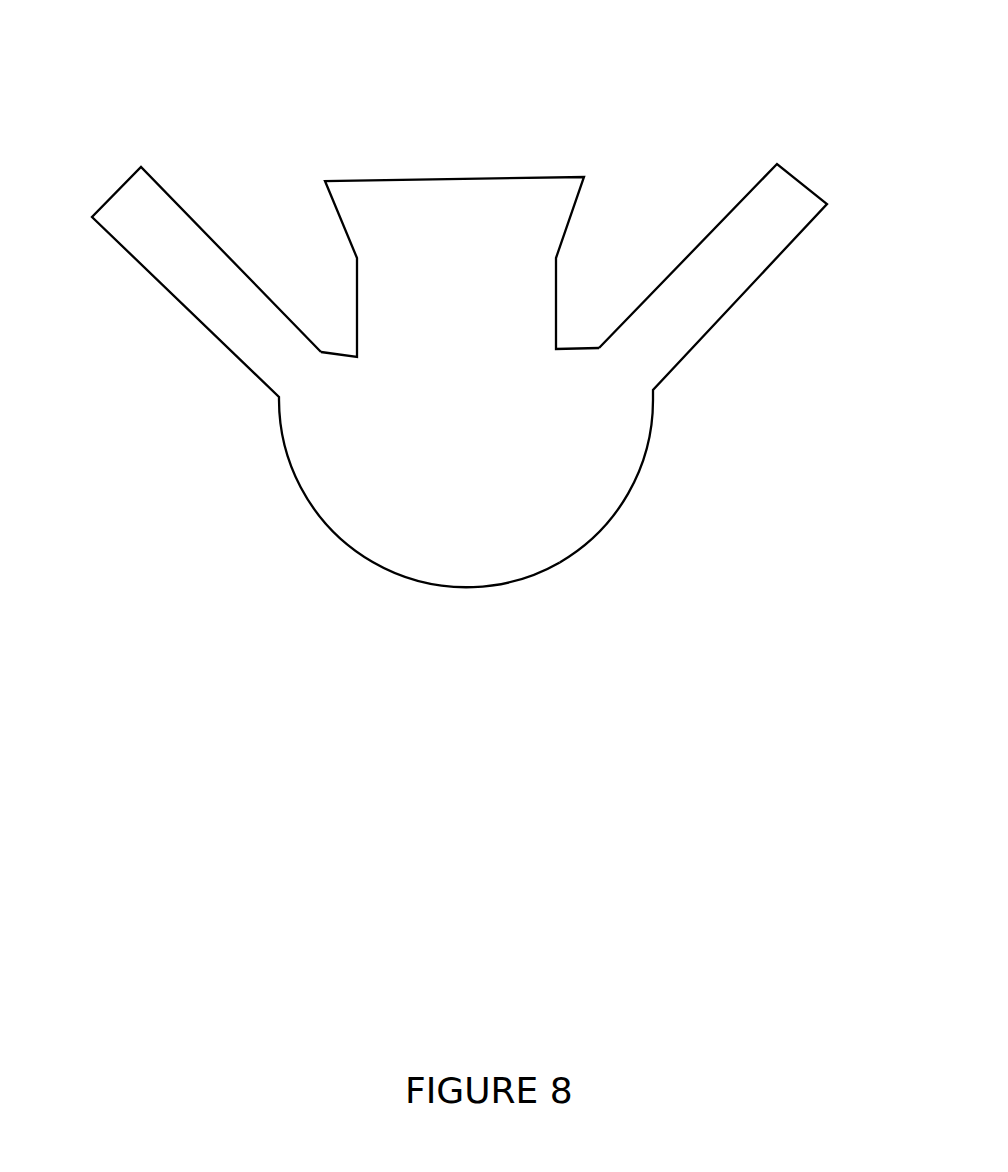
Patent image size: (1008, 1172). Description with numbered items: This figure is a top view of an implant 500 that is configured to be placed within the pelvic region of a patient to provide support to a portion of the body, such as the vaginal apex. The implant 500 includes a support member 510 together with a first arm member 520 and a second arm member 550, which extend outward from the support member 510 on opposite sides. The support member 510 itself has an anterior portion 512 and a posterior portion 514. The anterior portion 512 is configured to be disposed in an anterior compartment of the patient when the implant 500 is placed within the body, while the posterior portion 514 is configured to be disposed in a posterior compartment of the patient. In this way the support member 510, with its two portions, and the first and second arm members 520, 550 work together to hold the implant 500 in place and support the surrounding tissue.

The implant 500 is at (160, 62).
The support member 510 is at (603, 450).
The anterior portion 512 is at (570, 525).
The posterior portion 514 is at (518, 223).
The first arm member 520 is at (203, 298).
The second arm member 550 is at (758, 256).